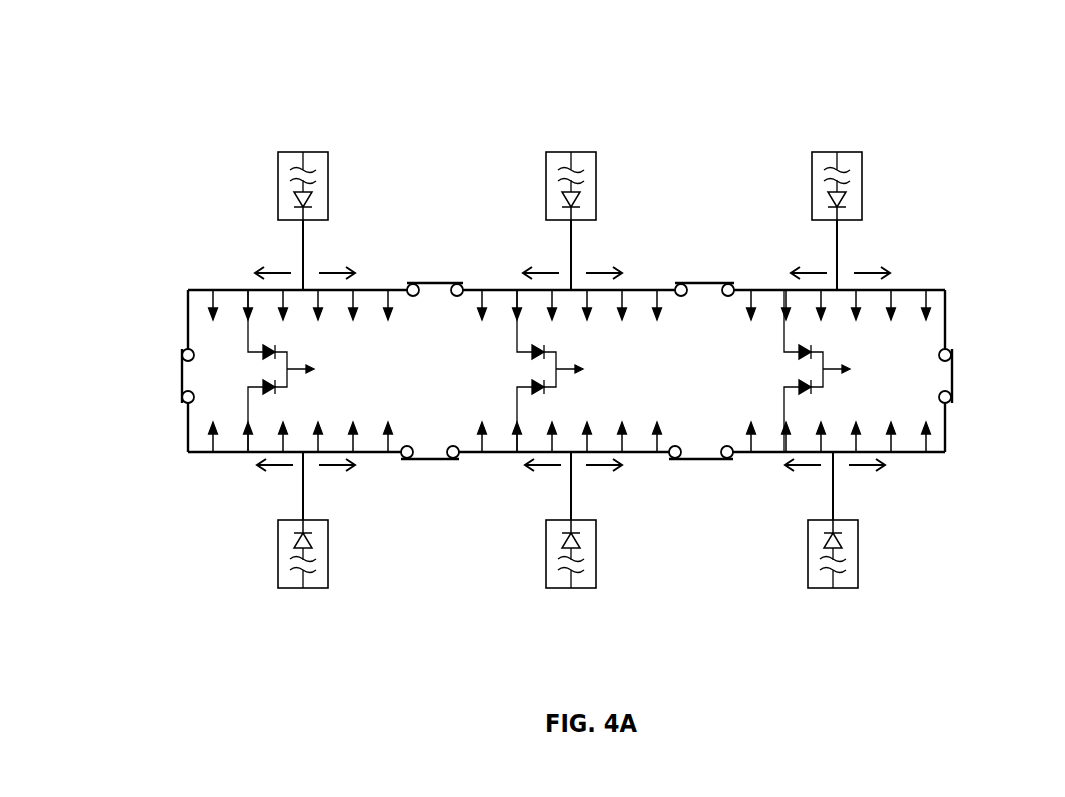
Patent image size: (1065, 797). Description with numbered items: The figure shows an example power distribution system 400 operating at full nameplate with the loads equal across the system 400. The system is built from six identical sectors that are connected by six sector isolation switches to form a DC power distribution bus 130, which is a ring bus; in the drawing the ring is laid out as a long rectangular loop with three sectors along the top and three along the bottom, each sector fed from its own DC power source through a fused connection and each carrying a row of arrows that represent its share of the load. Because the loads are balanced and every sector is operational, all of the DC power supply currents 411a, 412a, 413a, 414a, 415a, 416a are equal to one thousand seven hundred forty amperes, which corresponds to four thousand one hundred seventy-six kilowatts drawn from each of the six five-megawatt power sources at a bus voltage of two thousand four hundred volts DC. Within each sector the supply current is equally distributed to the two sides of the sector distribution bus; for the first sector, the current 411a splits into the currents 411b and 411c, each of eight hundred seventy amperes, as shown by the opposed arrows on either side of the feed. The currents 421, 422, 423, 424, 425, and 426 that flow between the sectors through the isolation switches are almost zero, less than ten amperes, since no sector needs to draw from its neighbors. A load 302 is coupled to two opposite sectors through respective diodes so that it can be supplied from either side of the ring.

The power distribution system 400 is at (184, 74).
The DC power distribution bus 130 is at (187, 312).
The DC power supply current 411a is at (272, 133).
The current 411b is at (277, 272).
The current 411c is at (330, 272).
The DC power supply current 412a is at (540, 133).
The DC power supply current 413a is at (808, 133).
The DC power supply current 414a is at (861, 604).
The DC power supply current 415a is at (600, 604).
The DC power supply current 416a is at (337, 604).
The current 421 is at (148, 394).
The current 422 is at (437, 243).
The current 423 is at (699, 243).
The current 424 is at (1006, 385).
The current 425 is at (705, 490).
The current 426 is at (437, 493).
The load 302 is at (893, 371).